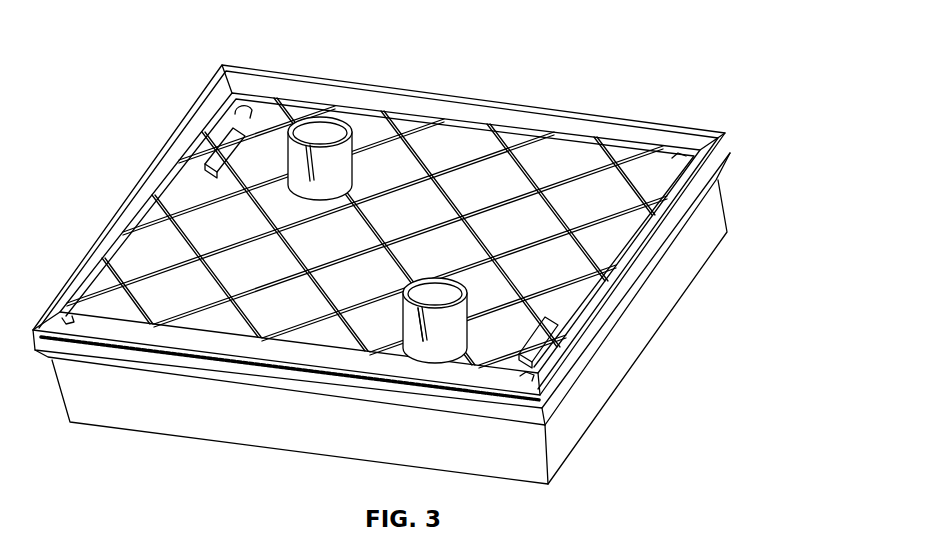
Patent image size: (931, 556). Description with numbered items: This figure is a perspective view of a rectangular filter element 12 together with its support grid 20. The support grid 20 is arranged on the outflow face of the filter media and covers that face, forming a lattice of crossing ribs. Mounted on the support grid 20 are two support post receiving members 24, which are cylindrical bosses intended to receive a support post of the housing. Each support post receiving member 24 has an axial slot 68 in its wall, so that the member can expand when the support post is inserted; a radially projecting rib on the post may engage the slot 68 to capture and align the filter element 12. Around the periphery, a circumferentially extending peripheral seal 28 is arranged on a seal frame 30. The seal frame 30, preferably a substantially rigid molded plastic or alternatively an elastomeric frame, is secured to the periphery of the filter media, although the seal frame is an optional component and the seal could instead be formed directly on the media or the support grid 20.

The filter element 12 is at (702, 237).
The support grid 20 is at (516, 165).
The support post receiving member 24 is at (358, 135).
The peripheral seal 28 is at (696, 142).
The seal frame 30 is at (716, 178).
The slot 68 is at (424, 331).